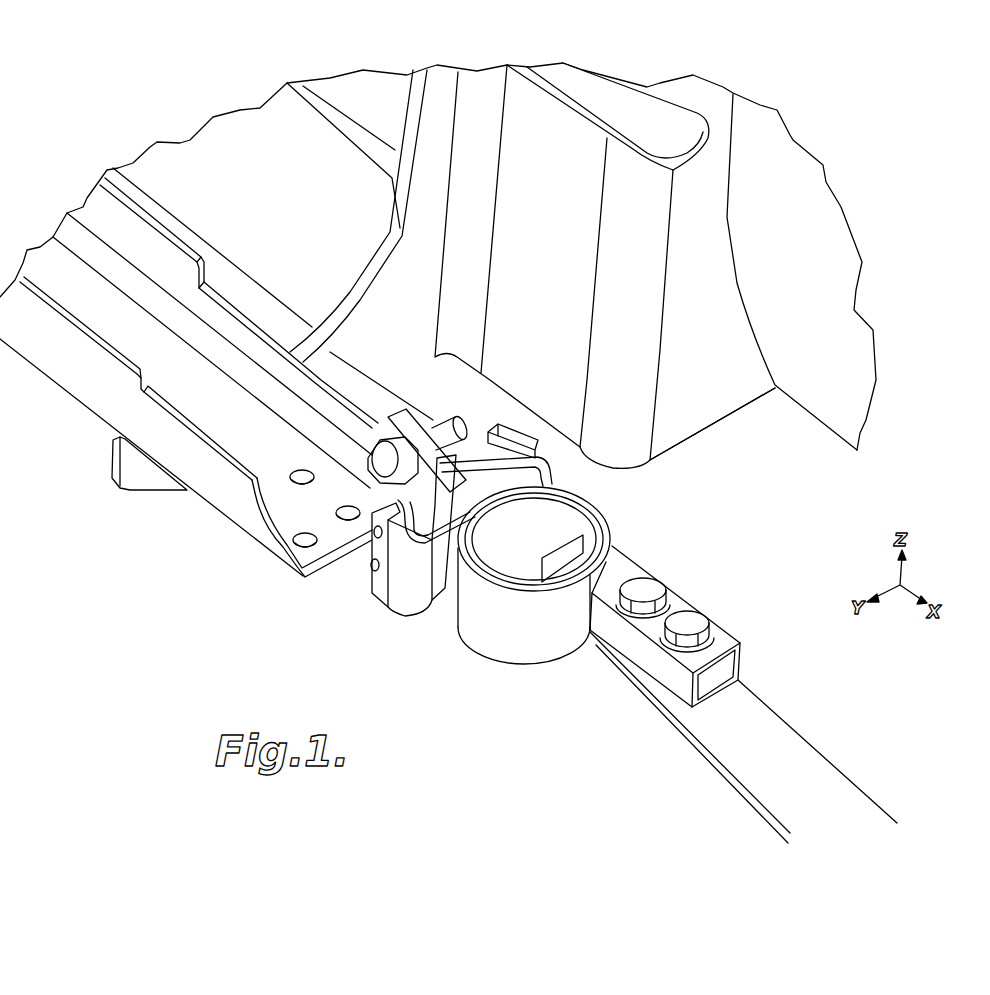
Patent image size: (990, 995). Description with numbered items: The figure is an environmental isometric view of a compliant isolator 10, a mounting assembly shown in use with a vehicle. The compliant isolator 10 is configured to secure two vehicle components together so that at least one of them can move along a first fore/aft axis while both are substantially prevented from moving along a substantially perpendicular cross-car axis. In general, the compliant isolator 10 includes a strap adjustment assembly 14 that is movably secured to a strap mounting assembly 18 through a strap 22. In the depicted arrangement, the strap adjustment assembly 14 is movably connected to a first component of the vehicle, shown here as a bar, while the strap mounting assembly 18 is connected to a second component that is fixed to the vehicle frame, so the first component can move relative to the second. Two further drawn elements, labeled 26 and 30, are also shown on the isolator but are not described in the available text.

The compliant isolator 10 is at (702, 517).
The strap adjustment assembly 14 is at (575, 675).
The strap mounting assembly 18 is at (364, 589).
The strap 22 is at (457, 636).
The ring 26 is at (582, 515).
The box connector with bolts 30 is at (741, 644).